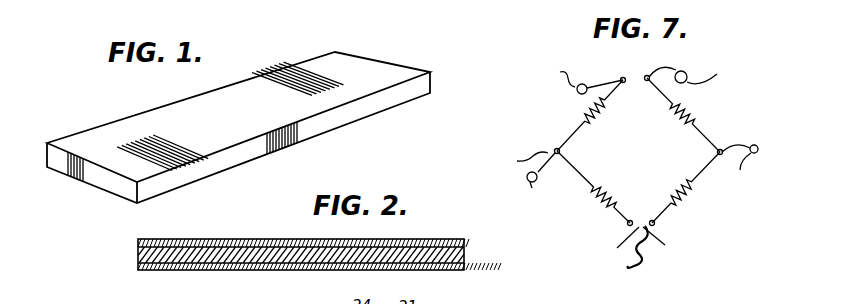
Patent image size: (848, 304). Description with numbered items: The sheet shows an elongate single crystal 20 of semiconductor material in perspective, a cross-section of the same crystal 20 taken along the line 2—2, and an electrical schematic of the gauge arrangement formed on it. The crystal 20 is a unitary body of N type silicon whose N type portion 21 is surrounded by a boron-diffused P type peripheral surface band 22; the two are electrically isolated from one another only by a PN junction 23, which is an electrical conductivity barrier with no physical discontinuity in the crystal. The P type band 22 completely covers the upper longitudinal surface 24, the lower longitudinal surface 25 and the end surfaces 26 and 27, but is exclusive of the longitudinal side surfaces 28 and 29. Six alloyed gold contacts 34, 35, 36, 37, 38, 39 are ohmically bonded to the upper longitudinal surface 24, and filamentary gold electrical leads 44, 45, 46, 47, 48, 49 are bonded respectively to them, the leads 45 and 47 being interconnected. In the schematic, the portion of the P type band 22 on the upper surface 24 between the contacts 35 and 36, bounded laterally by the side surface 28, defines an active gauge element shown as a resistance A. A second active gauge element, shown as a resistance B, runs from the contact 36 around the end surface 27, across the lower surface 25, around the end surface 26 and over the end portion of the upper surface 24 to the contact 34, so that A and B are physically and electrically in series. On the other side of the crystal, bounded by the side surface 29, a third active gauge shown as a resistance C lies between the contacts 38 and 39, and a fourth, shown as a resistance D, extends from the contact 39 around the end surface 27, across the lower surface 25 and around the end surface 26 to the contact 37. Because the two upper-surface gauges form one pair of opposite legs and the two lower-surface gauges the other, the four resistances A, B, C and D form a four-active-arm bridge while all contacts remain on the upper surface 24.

In FIG. 1, the section line 2— 2 is at (445, 55).
In FIG. 1, the crystal 20 is at (309, 72).
In FIG. 2, the crystal 20 is at (295, 257).
In FIG. 2, the N type silicon portion 21 is at (260, 250).
In FIG. 2, the P type peripheral surface band 22 is at (187, 239).
In FIG. 2, the PN junction 23 is at (233, 262).
In FIG. 2, the upper longitudinal surface 24 is at (423, 237).
In FIG. 2, the lower longitudinal surface 25 is at (423, 266).
In FIG. 2, the end surface 26 is at (463, 247).
In FIG. 2, the end surface 27 is at (138, 255).
In FIG. 1, the longitudinal side surface 28 is at (47, 152).
In FIG. 1, the longitudinal side surface 29 is at (422, 84).
In FIG. 7, the gold contact 34 is at (623, 77).
In FIG. 7, the gold contact 35 is at (628, 224).
In FIG. 7, the gold contact 36 is at (555, 148).
In FIG. 7, the gold contact 37 is at (655, 223).
In FIG. 7, the gold contact 38 is at (647, 75).
In FIG. 7, the gold contact 39 is at (722, 150).
In FIG. 7, the electrical lead 44 is at (578, 80).
In FIG. 7, the electrical lead 45 is at (611, 247).
In FIG. 7, the electrical lead 46 is at (524, 170).
In FIG. 7, the electrical lead 47 is at (661, 244).
In FIG. 7, the electrical lead 48 is at (692, 77).
In FIG. 7, the electrical lead 49 is at (743, 164).
In FIG. 7, the resistance A is at (601, 204).
In FIG. 7, the resistance B is at (589, 110).
In FIG. 7, the resistance C is at (686, 114).
In FIG. 7, the resistance D is at (685, 200).